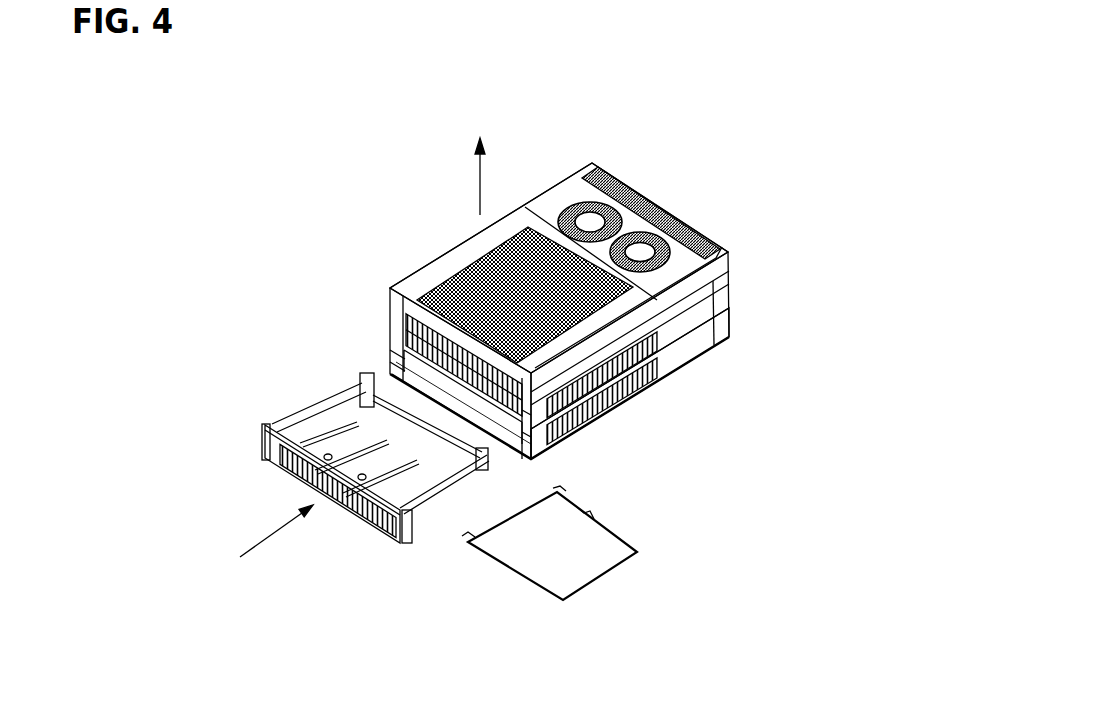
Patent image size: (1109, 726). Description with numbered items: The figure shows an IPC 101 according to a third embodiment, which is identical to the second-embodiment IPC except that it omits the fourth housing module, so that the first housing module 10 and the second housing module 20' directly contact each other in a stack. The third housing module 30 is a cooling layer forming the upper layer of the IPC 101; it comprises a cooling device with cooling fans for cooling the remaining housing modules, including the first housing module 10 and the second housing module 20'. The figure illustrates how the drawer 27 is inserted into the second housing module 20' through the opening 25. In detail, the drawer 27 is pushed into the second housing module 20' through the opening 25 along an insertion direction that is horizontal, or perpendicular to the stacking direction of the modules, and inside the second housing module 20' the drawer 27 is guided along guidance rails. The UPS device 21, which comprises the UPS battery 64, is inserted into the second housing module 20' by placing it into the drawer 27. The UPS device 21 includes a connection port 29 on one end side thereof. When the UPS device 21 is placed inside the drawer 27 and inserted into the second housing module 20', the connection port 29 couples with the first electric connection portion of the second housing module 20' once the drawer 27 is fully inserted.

The IPC 101 is at (268, 192).
The first housing module 10 is at (697, 302).
The third housing module 30 is at (730, 257).
The second housing module 20' is at (630, 383).
The opening 25 is at (497, 420).
The drawer 27 is at (360, 382).
The UPS device 21 is at (493, 577).
The UPS battery 64 is at (583, 562).
The connection port 29 is at (586, 523).